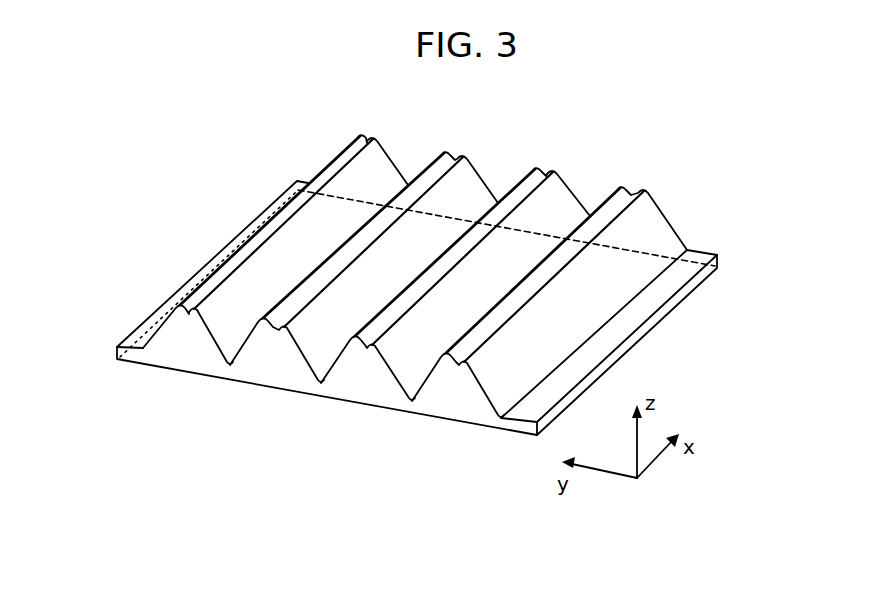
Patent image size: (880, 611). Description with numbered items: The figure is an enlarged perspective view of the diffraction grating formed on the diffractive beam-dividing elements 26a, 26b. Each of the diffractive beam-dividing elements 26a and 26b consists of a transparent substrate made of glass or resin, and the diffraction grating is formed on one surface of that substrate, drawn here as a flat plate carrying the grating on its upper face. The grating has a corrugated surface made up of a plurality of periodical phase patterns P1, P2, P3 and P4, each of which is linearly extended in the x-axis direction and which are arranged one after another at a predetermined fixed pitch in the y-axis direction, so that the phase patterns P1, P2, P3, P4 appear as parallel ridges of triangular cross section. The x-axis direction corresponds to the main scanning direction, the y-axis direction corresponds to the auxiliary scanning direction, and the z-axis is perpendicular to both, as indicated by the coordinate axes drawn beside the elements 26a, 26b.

The periodical phase pattern P1 is at (376, 141).
The periodical phase pattern P2 is at (466, 160).
The periodical phase pattern P3 is at (558, 180).
The periodical phase pattern P4 is at (652, 200).
The diffractive beam-dividing element 26a is at (452, 308).
The diffractive beam-dividing element 26b is at (633, 342).